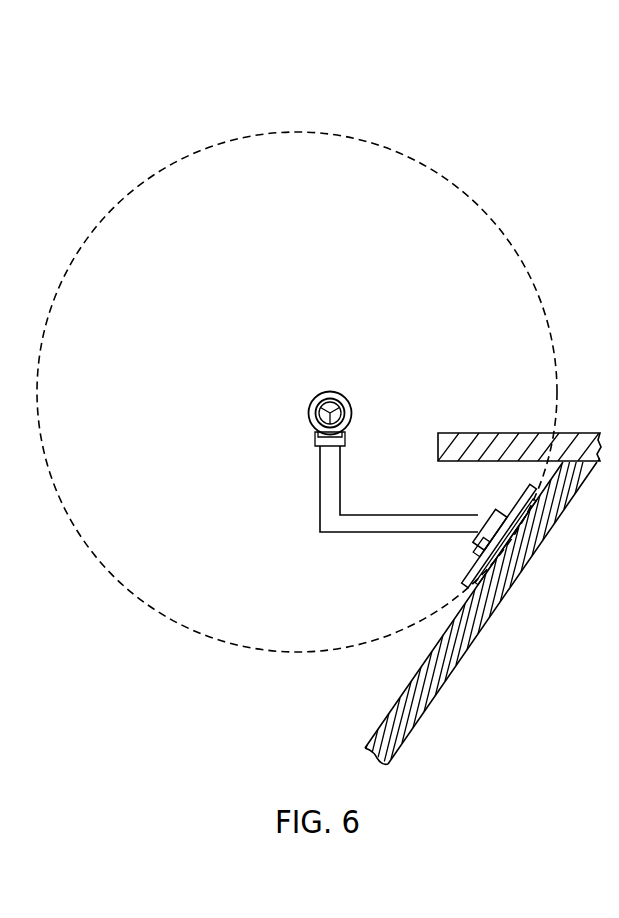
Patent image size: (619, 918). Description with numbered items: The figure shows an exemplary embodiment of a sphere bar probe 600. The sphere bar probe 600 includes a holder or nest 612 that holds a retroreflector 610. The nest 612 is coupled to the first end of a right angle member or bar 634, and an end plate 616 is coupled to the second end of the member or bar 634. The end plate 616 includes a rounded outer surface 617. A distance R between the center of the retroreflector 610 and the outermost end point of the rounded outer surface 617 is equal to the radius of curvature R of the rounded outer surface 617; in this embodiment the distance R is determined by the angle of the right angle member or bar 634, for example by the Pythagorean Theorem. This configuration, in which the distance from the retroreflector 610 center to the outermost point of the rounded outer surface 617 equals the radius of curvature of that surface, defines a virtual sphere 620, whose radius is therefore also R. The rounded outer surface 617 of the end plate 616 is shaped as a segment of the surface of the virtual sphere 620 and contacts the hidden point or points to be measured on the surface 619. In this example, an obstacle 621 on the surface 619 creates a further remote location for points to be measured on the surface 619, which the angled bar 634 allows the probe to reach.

The sphere bar probe 600 is at (115, 161).
The virtual sphere 620 is at (242, 137).
The retroreflector 610 is at (331, 394).
The nest 612 is at (322, 442).
The right angle member or bar 634 is at (329, 515).
The obstacle 621 is at (503, 440).
The surface 619 is at (389, 733).
The rounded outer surface 617 is at (503, 522).
The end plate 616 is at (470, 574).